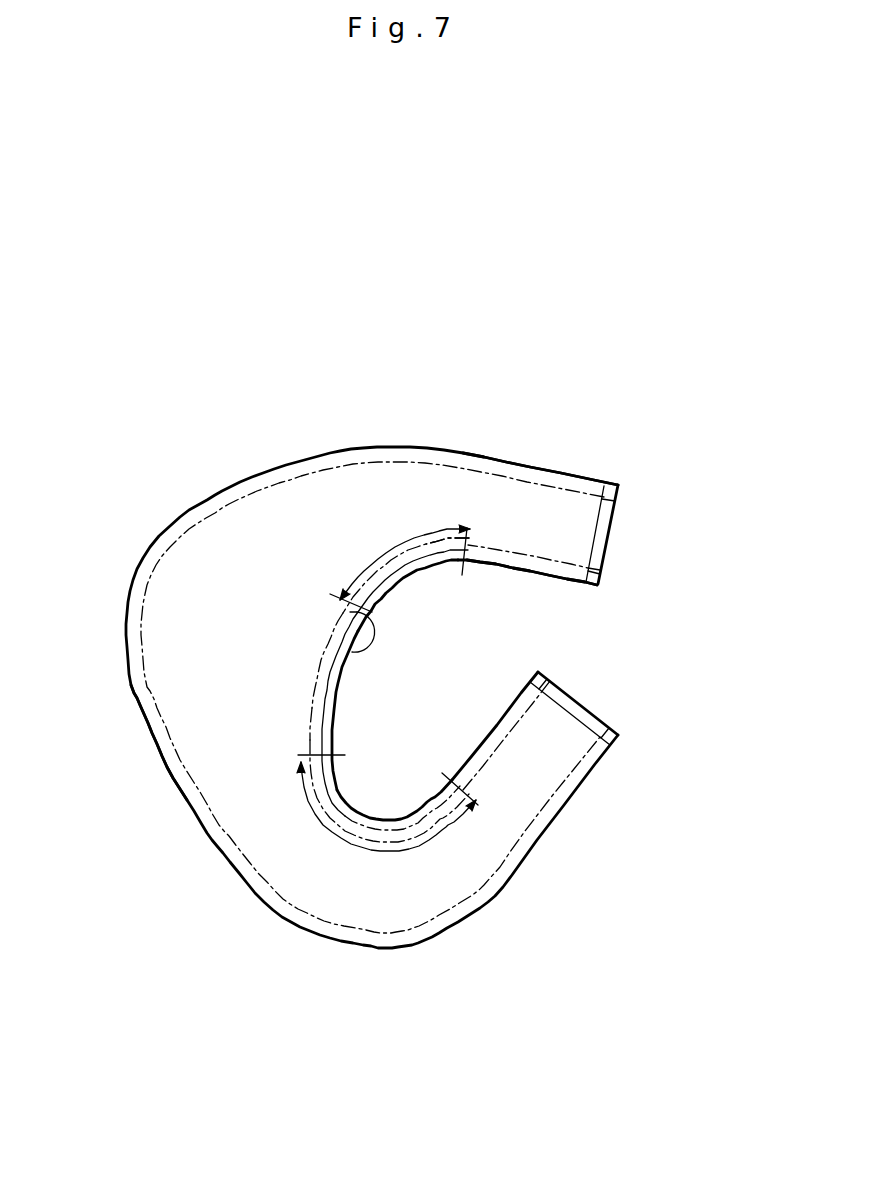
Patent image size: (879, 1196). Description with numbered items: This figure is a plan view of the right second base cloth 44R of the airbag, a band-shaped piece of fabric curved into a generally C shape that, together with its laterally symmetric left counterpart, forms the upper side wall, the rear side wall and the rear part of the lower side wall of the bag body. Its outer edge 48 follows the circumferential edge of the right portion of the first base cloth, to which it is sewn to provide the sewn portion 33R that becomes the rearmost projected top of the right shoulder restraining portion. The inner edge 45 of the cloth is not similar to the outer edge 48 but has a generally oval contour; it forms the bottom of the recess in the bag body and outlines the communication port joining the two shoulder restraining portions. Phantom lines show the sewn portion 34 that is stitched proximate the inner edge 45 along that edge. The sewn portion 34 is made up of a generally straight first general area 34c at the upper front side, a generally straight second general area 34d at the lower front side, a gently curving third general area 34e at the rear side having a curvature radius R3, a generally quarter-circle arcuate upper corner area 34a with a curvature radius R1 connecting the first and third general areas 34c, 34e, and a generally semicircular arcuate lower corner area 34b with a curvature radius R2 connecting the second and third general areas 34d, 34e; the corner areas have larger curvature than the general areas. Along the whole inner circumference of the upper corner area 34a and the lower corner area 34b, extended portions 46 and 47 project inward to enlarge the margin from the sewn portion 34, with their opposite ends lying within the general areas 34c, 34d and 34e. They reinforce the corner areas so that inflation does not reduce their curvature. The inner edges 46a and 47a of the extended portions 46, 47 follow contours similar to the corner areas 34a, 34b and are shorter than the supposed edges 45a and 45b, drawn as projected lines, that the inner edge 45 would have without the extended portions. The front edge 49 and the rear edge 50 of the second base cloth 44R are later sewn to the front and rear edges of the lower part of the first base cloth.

The sewn portion 33R is at (203, 503).
The sewn portion 34 is at (572, 577).
The upper corner area 34a is at (366, 576).
The lower corner area 34b is at (345, 833).
The first general area 34c is at (540, 556).
The second general area 34d is at (507, 740).
The third general area 34e is at (316, 688).
The second base cloth 44R is at (552, 458).
The inner edge 45 is at (334, 706).
The supposed edge 45a is at (432, 545).
The supposed edge 45b is at (355, 826).
The extended portion 46 is at (395, 563).
The inner edge 46a is at (352, 645).
The extended portion 47 is at (427, 808).
The inner edge 47a is at (407, 810).
The outer edge 48 is at (146, 718).
The front edge 49 is at (613, 537).
The rear edge 50 is at (580, 703).
The curvature radius R1 is at (408, 576).
The curvature radius R2 is at (383, 817).
The curvature radius R3 is at (341, 678).